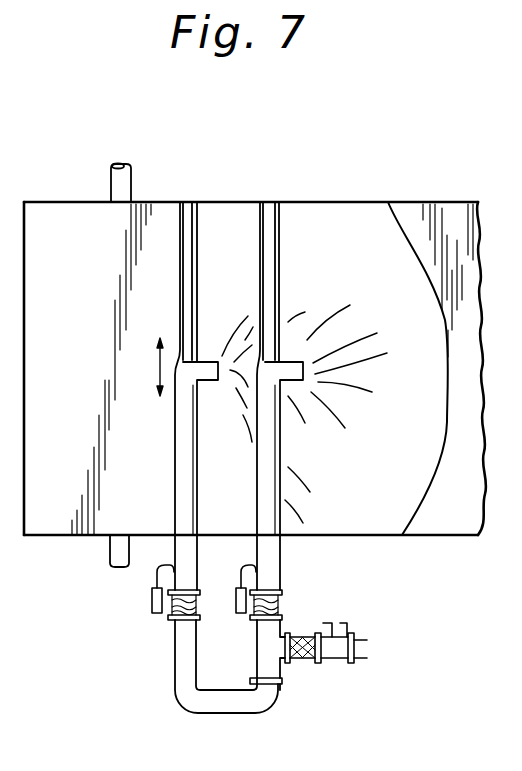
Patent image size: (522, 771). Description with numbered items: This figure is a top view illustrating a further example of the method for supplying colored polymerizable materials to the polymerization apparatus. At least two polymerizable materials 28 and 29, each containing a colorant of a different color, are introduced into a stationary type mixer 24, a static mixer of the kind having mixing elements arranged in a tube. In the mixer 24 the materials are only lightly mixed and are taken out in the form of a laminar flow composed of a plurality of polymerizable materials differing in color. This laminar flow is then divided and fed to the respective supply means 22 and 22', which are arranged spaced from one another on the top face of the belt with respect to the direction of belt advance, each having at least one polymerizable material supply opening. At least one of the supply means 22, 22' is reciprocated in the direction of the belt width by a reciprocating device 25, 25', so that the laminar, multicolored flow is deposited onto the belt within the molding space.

The supply means 22 is at (226, 457).
The supply means 22' is at (300, 446).
The stationary type mixer 24 is at (306, 662).
The reciprocating device 25 is at (148, 605).
The reciprocating device 25' is at (247, 624).
The polymerizable material 28 is at (363, 650).
The polymerizable material 29 is at (333, 638).